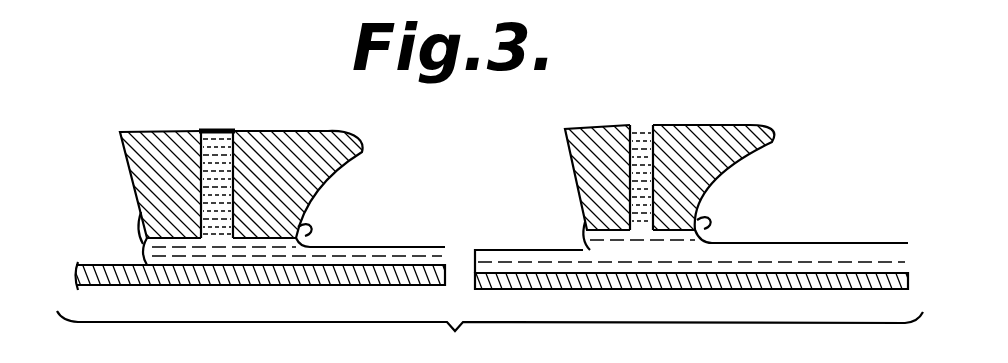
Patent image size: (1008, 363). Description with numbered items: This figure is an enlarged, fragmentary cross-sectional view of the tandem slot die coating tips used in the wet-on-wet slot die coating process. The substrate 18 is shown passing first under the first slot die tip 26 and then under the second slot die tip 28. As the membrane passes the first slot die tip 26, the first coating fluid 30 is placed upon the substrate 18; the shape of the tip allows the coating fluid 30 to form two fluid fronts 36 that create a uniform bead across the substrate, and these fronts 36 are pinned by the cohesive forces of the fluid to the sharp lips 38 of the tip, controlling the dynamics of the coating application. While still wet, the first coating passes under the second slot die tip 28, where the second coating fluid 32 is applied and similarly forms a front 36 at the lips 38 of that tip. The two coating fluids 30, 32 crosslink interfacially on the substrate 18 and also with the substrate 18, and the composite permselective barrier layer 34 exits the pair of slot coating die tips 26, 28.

The substrate 18 is at (318, 284).
The first slot die tip 26 is at (120, 150).
The second slot die tip 28 is at (570, 157).
The first coating fluid 30 is at (229, 134).
The second coating fluid 32 is at (645, 133).
The barrier layer 34 is at (823, 243).
The fluid fronts 36 is at (142, 252).
The sharp lips 38 is at (138, 228).